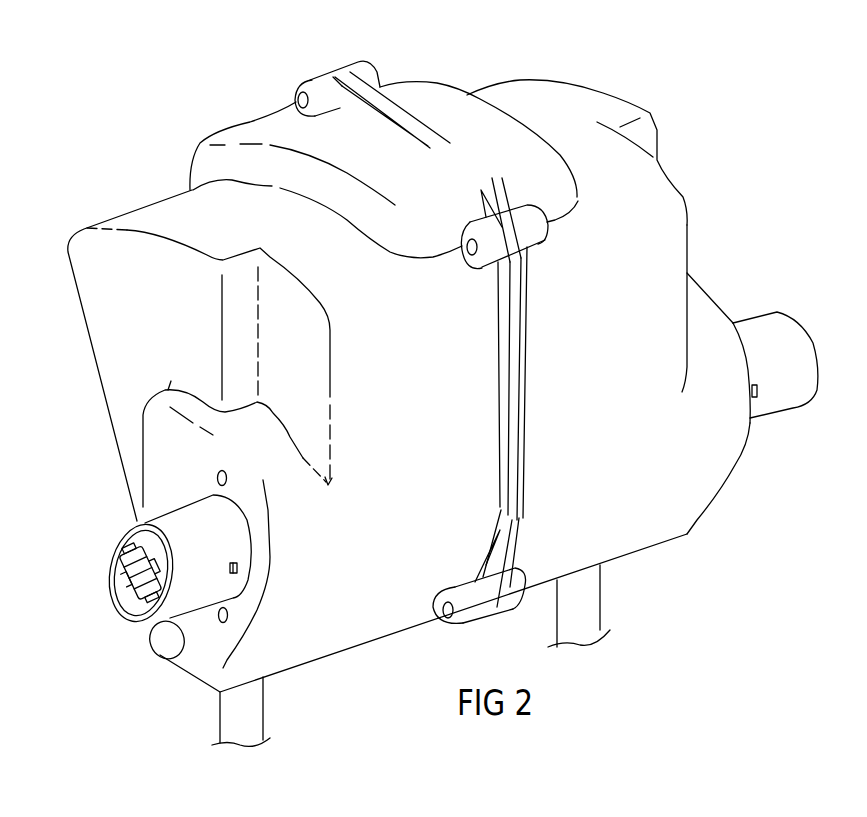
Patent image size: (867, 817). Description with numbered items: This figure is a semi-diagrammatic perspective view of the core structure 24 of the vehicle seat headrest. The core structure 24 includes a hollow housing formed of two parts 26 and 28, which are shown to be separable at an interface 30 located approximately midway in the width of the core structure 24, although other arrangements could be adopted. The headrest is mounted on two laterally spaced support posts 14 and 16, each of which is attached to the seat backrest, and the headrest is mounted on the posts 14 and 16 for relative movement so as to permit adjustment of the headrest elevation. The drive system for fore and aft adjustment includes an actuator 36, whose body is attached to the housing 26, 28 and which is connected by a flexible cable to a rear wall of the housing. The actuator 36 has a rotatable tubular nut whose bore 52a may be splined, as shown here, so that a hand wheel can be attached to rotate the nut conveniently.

The support post 14 is at (270, 710).
The support post 16 is at (605, 602).
The core structure 24 is at (691, 221).
The housing part 26 is at (105, 267).
The housing part 28 is at (640, 262).
The interface 30 is at (468, 162).
The actuator 36 is at (183, 536).
The bore 52a is at (127, 577).